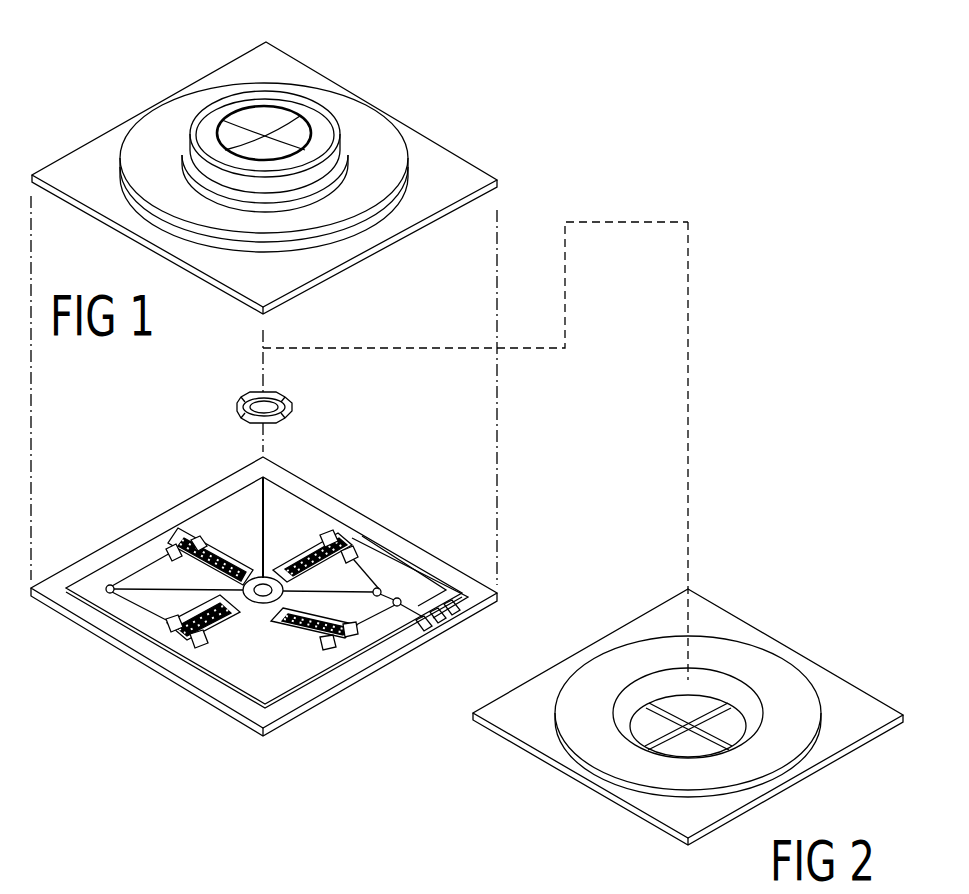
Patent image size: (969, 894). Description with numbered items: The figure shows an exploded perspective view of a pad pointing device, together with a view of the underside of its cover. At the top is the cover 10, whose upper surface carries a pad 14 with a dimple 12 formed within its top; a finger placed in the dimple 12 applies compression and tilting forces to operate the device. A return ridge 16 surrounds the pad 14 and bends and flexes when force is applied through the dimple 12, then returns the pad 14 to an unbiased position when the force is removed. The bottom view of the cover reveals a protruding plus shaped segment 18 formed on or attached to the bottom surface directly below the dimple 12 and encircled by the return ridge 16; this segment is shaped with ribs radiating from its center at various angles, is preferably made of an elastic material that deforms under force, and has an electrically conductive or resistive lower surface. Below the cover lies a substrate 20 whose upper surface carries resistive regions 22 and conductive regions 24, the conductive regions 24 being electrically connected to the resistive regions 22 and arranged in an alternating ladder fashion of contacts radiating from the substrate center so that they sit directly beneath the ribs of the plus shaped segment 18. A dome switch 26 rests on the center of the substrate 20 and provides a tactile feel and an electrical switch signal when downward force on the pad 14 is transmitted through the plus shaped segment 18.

In FIG. 1, the cover 10 is at (258, 44).
In FIG. 1, the dimple 12 is at (257, 117).
In FIG. 1, the pad 14 is at (300, 97).
In FIG. 1, the return ridge 16 is at (347, 165).
In FIG. 2, the return ridge 16 is at (625, 712).
In FIG. 2, the protruding plus shaped segment 18 is at (707, 703).
In FIG. 1, the substrate 20 is at (367, 520).
In FIG. 1, the resistive regions 22 is at (230, 548).
In FIG. 1, the conductive regions 24 is at (373, 540).
In FIG. 1, the dome switch 26 is at (295, 407).